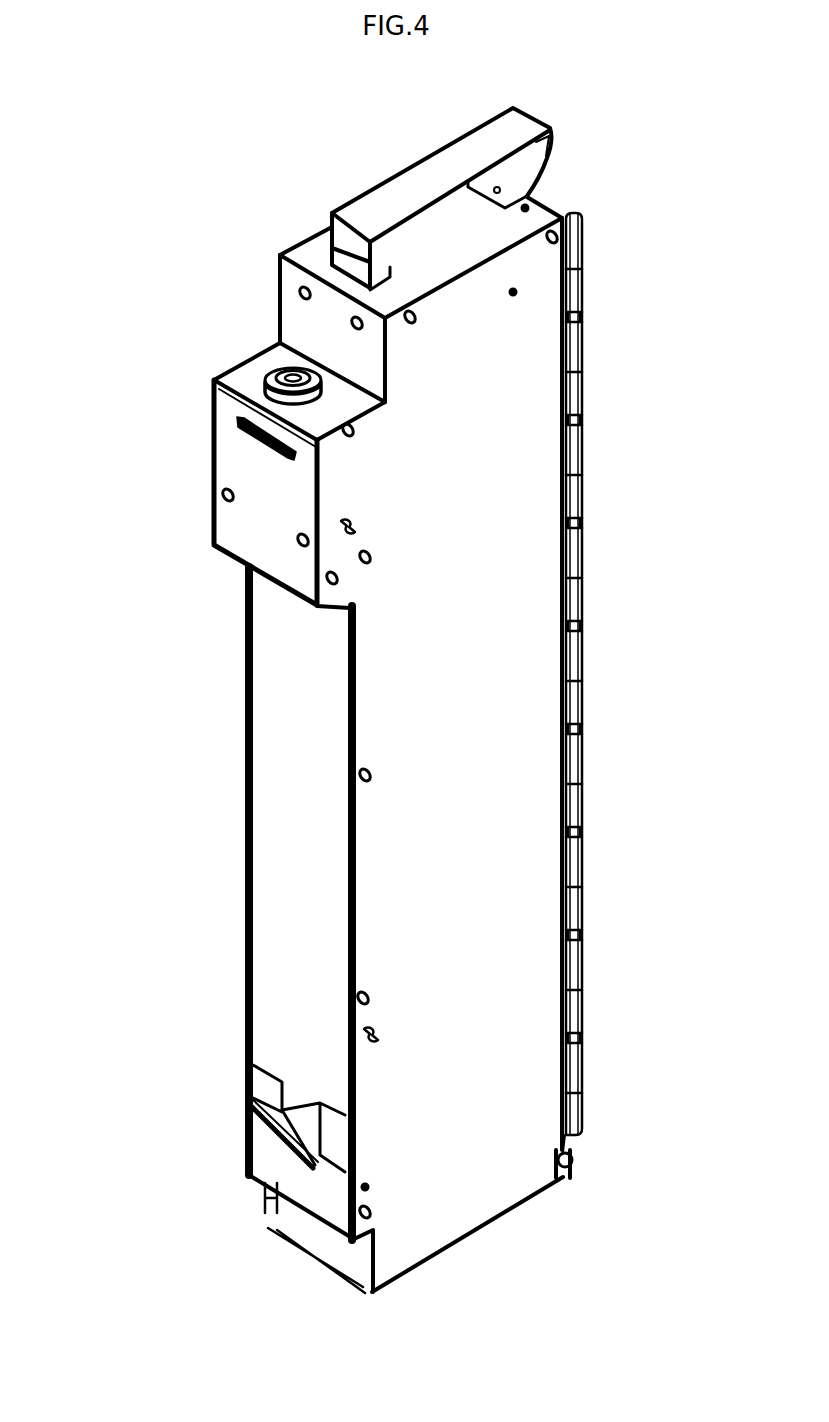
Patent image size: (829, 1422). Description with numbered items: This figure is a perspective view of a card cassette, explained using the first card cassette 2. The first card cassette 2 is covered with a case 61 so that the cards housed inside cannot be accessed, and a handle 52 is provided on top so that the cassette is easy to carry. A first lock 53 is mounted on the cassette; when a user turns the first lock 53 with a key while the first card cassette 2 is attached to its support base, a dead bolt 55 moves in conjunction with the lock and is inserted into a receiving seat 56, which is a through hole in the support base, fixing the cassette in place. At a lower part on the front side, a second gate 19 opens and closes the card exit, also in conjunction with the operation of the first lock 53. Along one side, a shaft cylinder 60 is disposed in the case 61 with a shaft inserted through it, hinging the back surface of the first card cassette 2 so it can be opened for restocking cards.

The first card cassette 2 is at (248, 723).
The second gate 19 is at (300, 1227).
The handle 52 is at (390, 205).
The first lock 53 is at (282, 378).
The dead bolt 55 is at (242, 438).
The receiving seat 56 is at (295, 448).
The shaft cylinder 60 is at (575, 293).
The case 61 is at (475, 432).